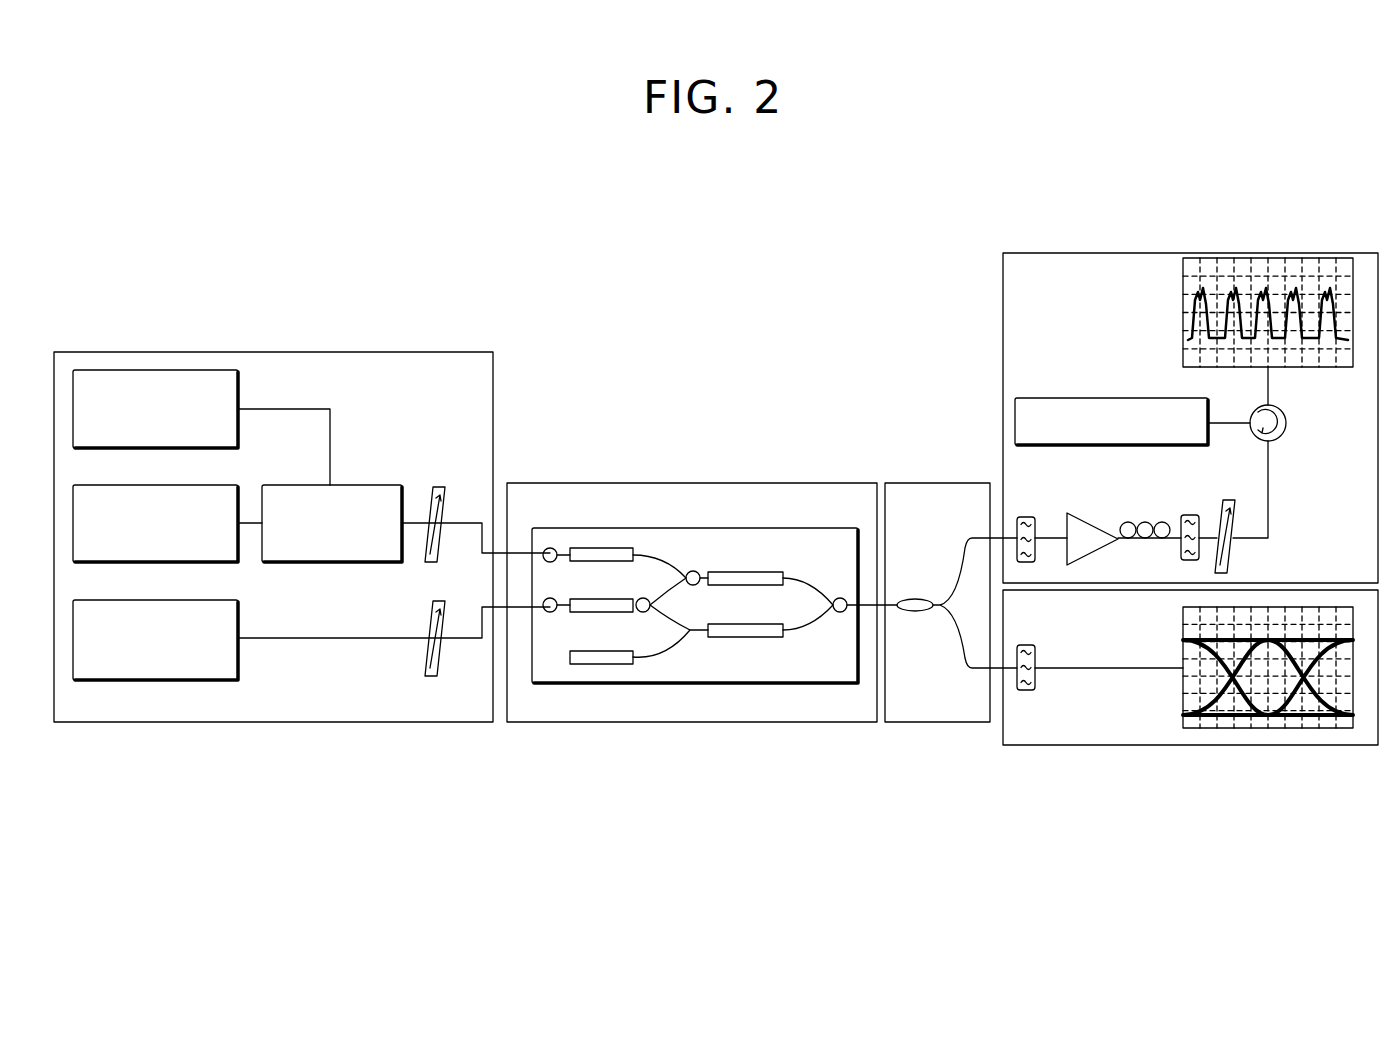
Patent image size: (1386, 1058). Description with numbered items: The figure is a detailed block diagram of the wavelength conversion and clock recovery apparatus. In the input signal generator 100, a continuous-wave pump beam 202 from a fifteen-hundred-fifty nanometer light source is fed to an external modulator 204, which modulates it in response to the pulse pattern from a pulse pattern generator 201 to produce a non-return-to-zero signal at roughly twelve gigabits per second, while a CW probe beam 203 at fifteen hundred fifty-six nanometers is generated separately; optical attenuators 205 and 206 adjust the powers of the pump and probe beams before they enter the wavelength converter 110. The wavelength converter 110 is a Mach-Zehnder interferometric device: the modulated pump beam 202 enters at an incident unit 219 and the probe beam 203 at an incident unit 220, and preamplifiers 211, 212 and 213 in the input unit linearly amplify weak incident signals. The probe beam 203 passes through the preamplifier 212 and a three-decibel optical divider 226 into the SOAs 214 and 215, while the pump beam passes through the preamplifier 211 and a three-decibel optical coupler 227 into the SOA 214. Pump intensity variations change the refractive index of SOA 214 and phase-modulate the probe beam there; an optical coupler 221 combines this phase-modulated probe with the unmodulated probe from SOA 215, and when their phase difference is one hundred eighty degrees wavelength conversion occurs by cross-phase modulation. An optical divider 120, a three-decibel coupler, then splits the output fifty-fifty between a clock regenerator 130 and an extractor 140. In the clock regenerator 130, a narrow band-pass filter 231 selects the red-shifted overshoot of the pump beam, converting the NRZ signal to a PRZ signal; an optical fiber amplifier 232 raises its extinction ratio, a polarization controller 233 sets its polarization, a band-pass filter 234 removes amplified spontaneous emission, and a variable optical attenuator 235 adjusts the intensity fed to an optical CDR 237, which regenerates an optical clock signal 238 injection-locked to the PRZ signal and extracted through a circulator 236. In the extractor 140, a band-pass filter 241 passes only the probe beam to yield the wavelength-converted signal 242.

The input signal generator 100 is at (493, 382).
The wavelength converter 110 is at (717, 483).
The optical divider 120 is at (935, 483).
The clock regenerator 130 is at (1003, 275).
The extractor 140 is at (1105, 745).
The pulse pattern generator 201 is at (238, 385).
The CW pump beam 202 is at (236, 485).
The CW probe beam 203 is at (238, 614).
The external modulator 204 is at (371, 485).
The optical attenuator 205 is at (433, 541).
The optical attenuator 206 is at (438, 661).
The preamplifier 211 is at (620, 548).
The preamplifier 212 is at (615, 598).
The preamplifier 213 is at (597, 664).
The SOA 214 is at (772, 572).
The SOA 215 is at (745, 637).
The incident unit 219 is at (550, 548).
The incident unit 220 is at (548, 613).
The optical coupler 221 is at (840, 615).
The 3-dB optical divider 226 is at (645, 617).
The 3-dB optical coupler 227 is at (691, 571).
The band-pass filter 231 is at (1025, 517).
The optical fiber amplifier 232 is at (1085, 520).
The polarization controller 233 is at (1143, 522).
The band-pass filter 234 is at (1180, 552).
The variable optical attenuator 235 is at (1233, 555).
The circulator 236 is at (1280, 442).
The optical CDR 237 is at (1080, 398).
The optical clock signal 238 is at (1325, 367).
The band-pass filter 241 is at (1030, 690).
The wavelength-converted signal 242 is at (1183, 693).